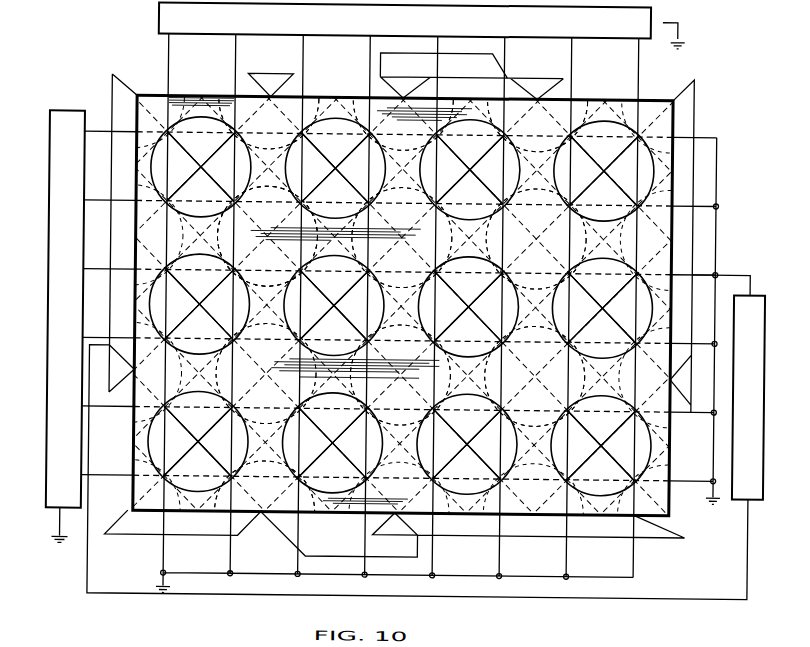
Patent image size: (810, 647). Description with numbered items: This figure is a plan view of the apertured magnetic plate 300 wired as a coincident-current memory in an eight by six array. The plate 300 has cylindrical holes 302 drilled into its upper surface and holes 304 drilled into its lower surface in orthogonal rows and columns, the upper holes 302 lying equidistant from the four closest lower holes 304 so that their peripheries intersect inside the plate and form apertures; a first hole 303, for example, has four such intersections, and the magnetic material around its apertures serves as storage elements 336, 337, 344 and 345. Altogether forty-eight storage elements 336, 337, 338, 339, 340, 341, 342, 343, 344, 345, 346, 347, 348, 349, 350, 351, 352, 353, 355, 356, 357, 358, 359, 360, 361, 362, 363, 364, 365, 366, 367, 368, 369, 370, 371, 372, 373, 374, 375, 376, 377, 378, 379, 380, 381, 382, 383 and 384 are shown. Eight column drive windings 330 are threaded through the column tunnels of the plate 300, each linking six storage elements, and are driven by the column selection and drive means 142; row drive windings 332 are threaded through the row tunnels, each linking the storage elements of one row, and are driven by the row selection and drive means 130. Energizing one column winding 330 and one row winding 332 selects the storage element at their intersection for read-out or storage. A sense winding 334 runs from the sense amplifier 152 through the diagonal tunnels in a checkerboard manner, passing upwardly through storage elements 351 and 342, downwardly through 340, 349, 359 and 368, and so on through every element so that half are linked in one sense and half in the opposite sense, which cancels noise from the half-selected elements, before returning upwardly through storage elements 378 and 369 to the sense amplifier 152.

The row selection and drive means 130 is at (68, 114).
The column selection and drive means 142 is at (156, 20).
The sense amplifier 152 is at (744, 496).
The plate 300 is at (155, 87).
The holes 302 is at (419, 182).
The first hole 303 is at (285, 182).
The holes 304 is at (227, 247).
The column drive windings 330 is at (168, 54).
The row drive windings 332 is at (98, 133).
The sense winding 334 is at (116, 83).
The storage element 336 is at (181, 136).
The storage element 337 is at (240, 162).
The storage element 338 is at (315, 136).
The storage element 339 is at (374, 162).
The storage element 340 is at (450, 136).
The storage element 341 is at (509, 162).
The storage element 342 is at (584, 136).
The storage element 343 is at (643, 162).
The storage element 344 is at (159, 178).
The storage element 345 is at (218, 205).
The storage element 346 is at (293, 178).
The storage element 347 is at (353, 205).
The storage element 348 is at (428, 178).
The storage element 349 is at (487, 205).
The storage element 350 is at (562, 178).
The storage element 351 is at (621, 205).
The storage element 352 is at (181, 273).
The storage element 353 is at (240, 299).
The storage element 355 is at (315, 273).
The storage element 356 is at (374, 299).
The storage element 357 is at (450, 273).
The storage element 358 is at (509, 299).
The storage element 359 is at (584, 273).
The storage element 360 is at (643, 299).
The storage element 361 is at (159, 315).
The storage element 362 is at (218, 342).
The storage element 363 is at (293, 315).
The storage element 364 is at (353, 342).
The storage element 365 is at (428, 315).
The storage element 366 is at (487, 342).
The storage element 367 is at (562, 315).
The storage element 368 is at (621, 342).
The storage element 369 is at (181, 410).
The storage element 370 is at (240, 436).
The storage element 371 is at (315, 410).
The storage element 372 is at (374, 436).
The storage element 373 is at (450, 410).
The storage element 374 is at (509, 436).
The storage element 375 is at (584, 410).
The storage element 376 is at (643, 436).
The storage element 377 is at (159, 452).
The storage element 378 is at (218, 479).
The storage element 379 is at (293, 452).
The storage element 380 is at (353, 479).
The storage element 381 is at (428, 452).
The storage element 382 is at (487, 479).
The storage element 383 is at (562, 452).
The storage element 384 is at (621, 479).